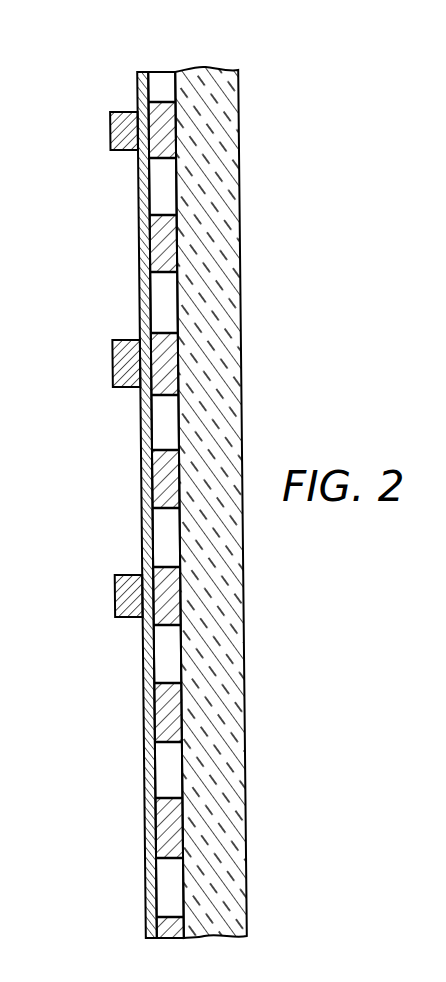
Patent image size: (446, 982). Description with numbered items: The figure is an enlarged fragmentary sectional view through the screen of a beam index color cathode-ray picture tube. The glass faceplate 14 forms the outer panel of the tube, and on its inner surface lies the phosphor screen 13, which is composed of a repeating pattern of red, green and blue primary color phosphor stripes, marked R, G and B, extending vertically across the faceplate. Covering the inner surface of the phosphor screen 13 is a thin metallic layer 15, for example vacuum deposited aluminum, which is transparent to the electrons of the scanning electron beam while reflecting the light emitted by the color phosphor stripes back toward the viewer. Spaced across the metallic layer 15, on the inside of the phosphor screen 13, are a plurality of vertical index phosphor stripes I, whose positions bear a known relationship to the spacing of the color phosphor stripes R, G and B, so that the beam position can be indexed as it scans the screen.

The phosphor screen 13 is at (167, 64).
The glass faceplate 14 is at (243, 784).
The thin metallic layer 15 is at (145, 774).
The index phosphor stripes I is at (112, 147).